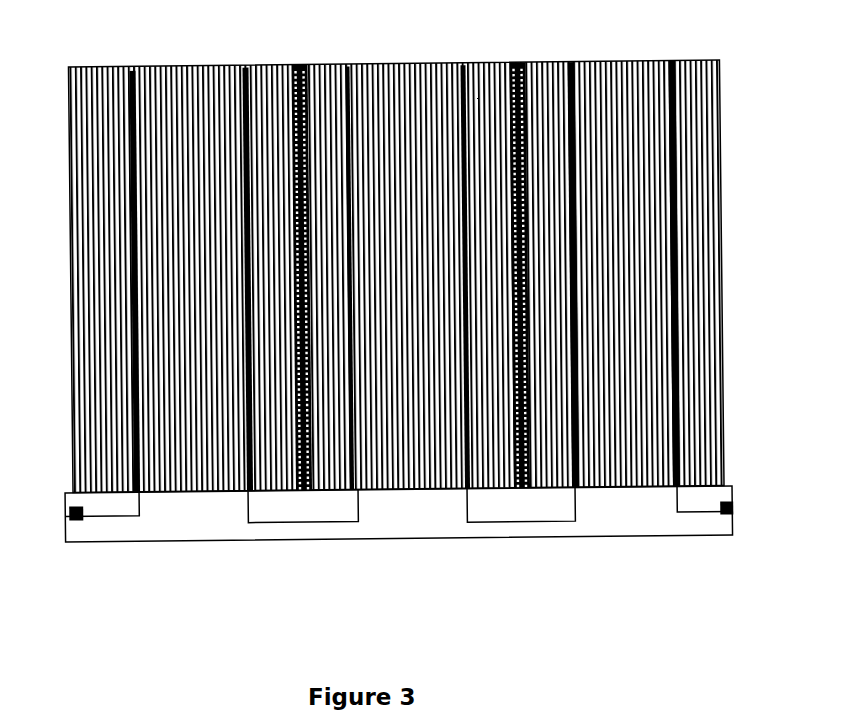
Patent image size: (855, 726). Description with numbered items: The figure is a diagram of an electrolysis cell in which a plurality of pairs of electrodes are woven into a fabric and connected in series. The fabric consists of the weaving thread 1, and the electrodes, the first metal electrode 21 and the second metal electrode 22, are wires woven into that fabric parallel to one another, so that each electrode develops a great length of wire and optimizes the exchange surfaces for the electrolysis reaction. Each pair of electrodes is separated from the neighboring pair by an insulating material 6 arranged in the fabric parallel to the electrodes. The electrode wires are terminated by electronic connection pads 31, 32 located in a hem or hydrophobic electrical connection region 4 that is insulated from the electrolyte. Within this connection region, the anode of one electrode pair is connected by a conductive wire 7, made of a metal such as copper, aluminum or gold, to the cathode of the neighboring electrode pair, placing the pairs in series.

The weaving thread 1 is at (622, 72).
The metal electrode Metal 1 21 is at (677, 122).
The metal electrode Metal 2 22 is at (575, 242).
The insulating material 6 is at (530, 412).
The electronic connection pad 31 is at (716, 515).
The conductive wire 7 is at (497, 524).
The electronic connection pad 32 is at (68, 521).
The hydrophobic electrical connection region 4 is at (728, 497).